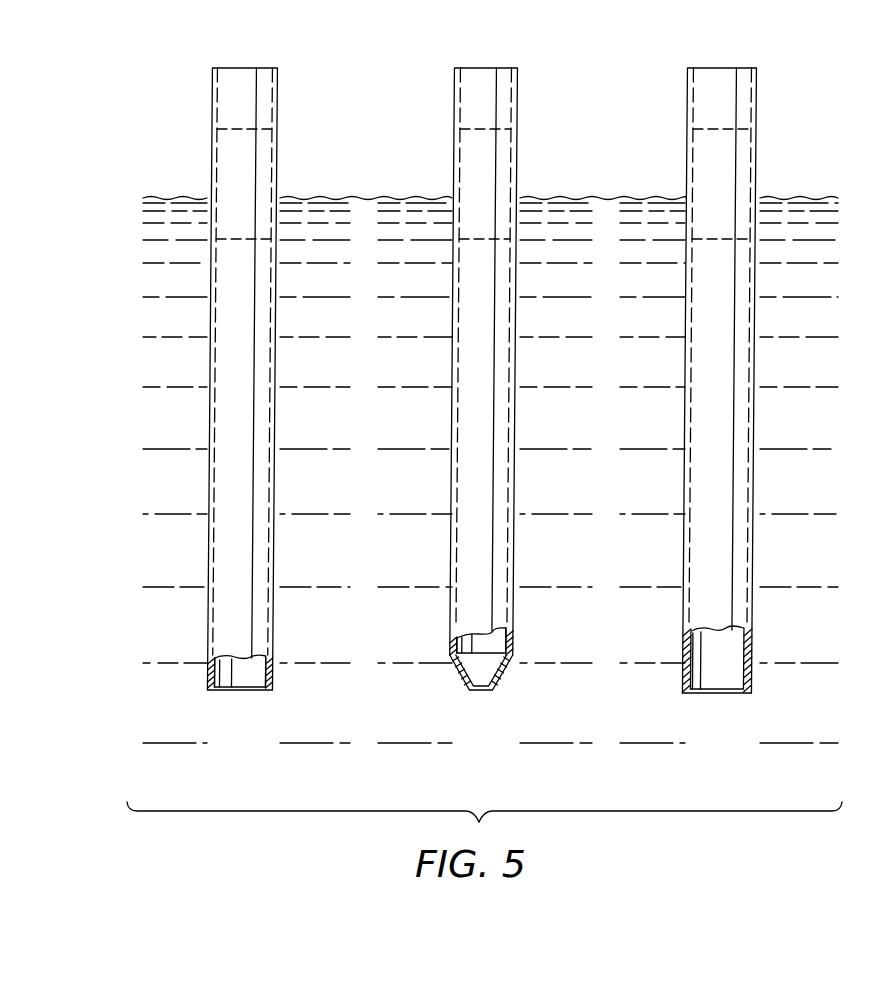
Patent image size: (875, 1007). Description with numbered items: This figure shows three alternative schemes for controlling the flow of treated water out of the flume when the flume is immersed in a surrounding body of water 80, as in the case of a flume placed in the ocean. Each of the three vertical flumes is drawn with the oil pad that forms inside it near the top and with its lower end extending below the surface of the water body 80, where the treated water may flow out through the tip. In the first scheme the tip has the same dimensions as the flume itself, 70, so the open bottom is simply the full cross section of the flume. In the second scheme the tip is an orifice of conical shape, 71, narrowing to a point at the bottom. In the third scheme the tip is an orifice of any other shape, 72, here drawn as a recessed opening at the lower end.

The body of water 80 is at (317, 196).
The tip of same dimensions as the flume 70 is at (245, 692).
The orifice of conical shape 71 is at (482, 692).
The orifice of any other shape 72 is at (720, 694).